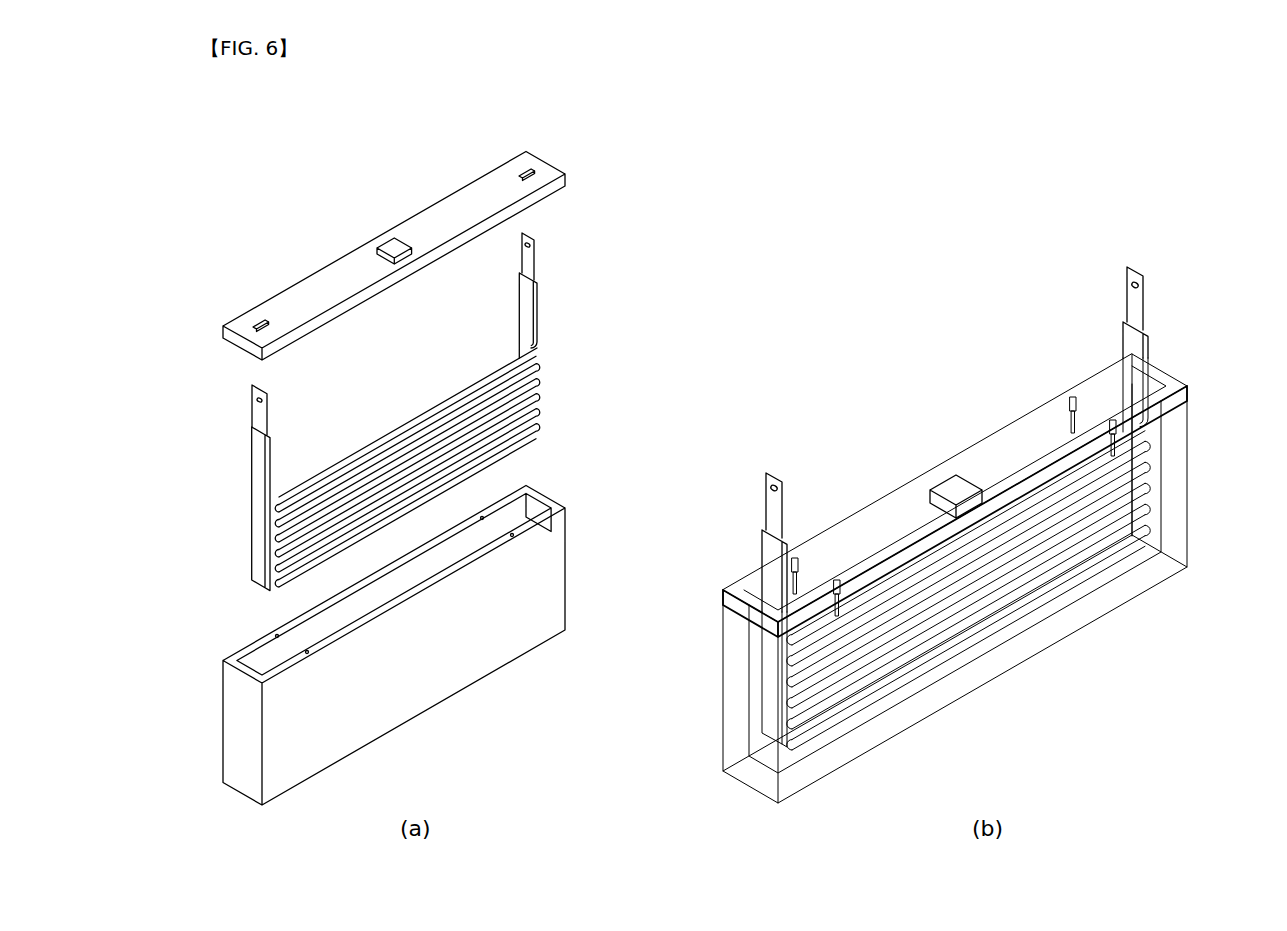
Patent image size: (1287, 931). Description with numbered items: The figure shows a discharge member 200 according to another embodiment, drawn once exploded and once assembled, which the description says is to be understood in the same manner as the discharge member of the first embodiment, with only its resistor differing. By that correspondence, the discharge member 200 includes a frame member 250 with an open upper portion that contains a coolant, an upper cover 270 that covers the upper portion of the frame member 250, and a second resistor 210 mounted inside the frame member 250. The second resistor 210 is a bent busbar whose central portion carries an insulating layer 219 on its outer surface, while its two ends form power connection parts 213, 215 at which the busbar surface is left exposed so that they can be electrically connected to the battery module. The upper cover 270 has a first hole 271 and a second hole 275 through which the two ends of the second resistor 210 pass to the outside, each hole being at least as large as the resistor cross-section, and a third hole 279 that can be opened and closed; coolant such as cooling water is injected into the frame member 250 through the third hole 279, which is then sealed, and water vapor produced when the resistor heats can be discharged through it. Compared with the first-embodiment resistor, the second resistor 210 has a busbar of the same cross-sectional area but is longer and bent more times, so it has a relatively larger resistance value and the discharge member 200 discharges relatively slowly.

The discharge member 200 is at (366, 140).
The second resistor 210 is at (552, 390).
The first electrode tab 213 is at (258, 410).
The second electrode tab 215 is at (527, 262).
The tab sleeve 219 is at (258, 480).
The case 250 is at (237, 740).
The cap plate 270 is at (323, 282).
The first terminal hole 271 is at (252, 320).
The second terminal hole 275 is at (533, 168).
The electrolyte injection hole 279 is at (388, 247).